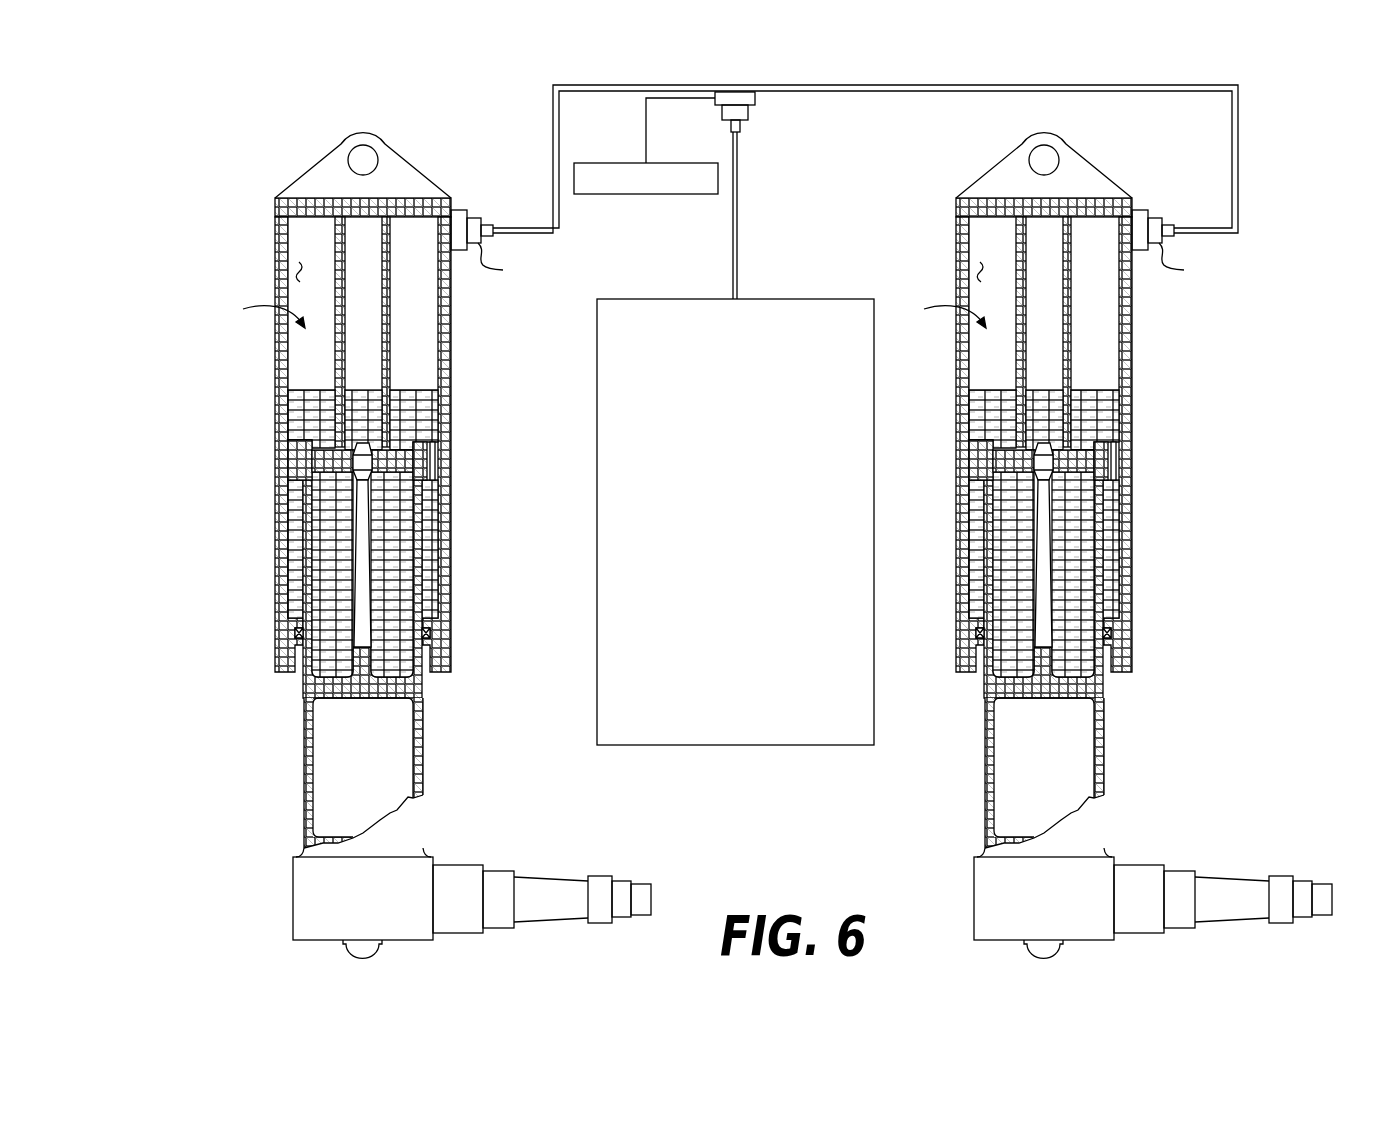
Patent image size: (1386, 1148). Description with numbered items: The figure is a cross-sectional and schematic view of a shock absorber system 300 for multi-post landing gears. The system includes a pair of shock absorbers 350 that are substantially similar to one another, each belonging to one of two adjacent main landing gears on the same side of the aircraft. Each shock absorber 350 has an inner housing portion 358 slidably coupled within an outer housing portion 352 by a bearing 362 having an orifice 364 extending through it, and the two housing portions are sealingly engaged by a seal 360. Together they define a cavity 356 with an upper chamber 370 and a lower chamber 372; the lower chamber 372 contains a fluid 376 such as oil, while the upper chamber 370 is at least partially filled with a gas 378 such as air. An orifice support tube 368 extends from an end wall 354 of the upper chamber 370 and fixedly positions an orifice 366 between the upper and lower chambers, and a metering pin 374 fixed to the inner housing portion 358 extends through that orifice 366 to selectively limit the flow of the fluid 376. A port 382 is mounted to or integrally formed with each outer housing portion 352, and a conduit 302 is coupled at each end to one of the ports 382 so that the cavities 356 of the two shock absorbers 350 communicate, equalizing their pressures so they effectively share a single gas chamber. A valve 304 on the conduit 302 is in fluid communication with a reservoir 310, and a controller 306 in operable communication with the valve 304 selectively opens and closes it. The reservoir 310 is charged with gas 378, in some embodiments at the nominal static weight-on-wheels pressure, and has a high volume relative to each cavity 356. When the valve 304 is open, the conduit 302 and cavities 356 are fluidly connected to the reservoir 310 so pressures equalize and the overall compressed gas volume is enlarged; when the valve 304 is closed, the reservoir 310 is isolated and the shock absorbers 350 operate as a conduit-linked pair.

The shock absorber system 300 is at (190, 117).
The conduit 302 is at (578, 85).
The valve 304 is at (752, 108).
The controller 306 is at (615, 163).
The reservoir 310 is at (597, 330).
The shock absorber 350 is at (671, 166).
The outer housing portion 352 is at (734, 444).
The end wall 354 is at (672, 219).
The cavity 356 is at (596, 311).
The inner housing portion 358 is at (812, 828).
The seal 360 is at (742, 634).
The bearing 362 is at (738, 449).
The orifice 364 is at (809, 460).
The orifice 366 is at (631, 445).
The orifice support tube 368 is at (762, 332).
The upper chamber 370 is at (663, 398).
The lower chamber 372 is at (664, 550).
The metering pin 374 is at (774, 563).
The fluid 376 is at (656, 585).
The gas 378 is at (595, 270).
The port 382 is at (838, 247).